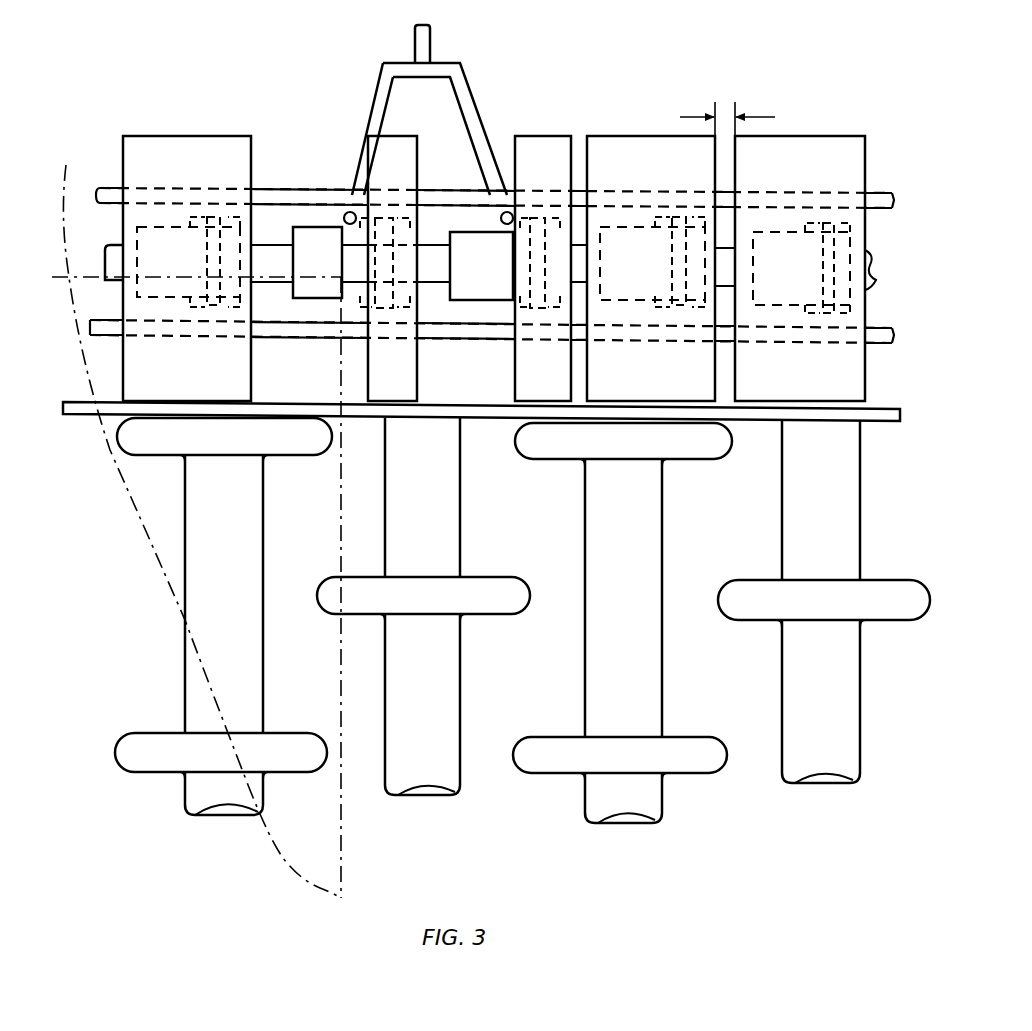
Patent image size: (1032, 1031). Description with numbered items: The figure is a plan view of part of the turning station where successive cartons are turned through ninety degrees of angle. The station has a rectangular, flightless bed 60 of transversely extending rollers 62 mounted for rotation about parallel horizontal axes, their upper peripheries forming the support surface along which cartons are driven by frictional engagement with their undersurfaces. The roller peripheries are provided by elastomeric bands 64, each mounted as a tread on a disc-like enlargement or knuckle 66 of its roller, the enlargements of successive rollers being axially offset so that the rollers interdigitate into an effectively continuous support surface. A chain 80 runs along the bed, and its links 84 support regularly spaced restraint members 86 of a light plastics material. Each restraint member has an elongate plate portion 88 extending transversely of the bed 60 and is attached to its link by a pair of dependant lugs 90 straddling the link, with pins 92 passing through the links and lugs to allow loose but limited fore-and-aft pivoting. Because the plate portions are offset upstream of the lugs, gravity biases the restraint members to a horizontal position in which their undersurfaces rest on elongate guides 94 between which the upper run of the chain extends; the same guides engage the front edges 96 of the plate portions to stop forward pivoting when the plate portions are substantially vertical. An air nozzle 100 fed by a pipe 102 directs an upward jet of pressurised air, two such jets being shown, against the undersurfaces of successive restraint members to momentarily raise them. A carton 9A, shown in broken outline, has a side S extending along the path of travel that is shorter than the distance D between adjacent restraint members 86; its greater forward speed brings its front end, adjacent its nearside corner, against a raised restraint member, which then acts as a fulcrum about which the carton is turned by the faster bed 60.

The bed 60 is at (178, 600).
The rollers 62 is at (385, 683).
The bands 64 is at (305, 442).
The enlargements 66 is at (285, 457).
The chain 80 is at (103, 258).
The links 84 is at (326, 304).
The restraint members 86 is at (235, 128).
The plate portion 88 is at (197, 150).
The lugs 90 is at (418, 200).
The pins 92 is at (360, 250).
The guides 94 is at (888, 194).
The front edges 96 is at (252, 142).
The air nozzle 100 is at (346, 212).
The pipe 102 is at (375, 110).
The distance D is at (727, 108).
The carton 9A is at (343, 838).
The side S is at (199, 519).